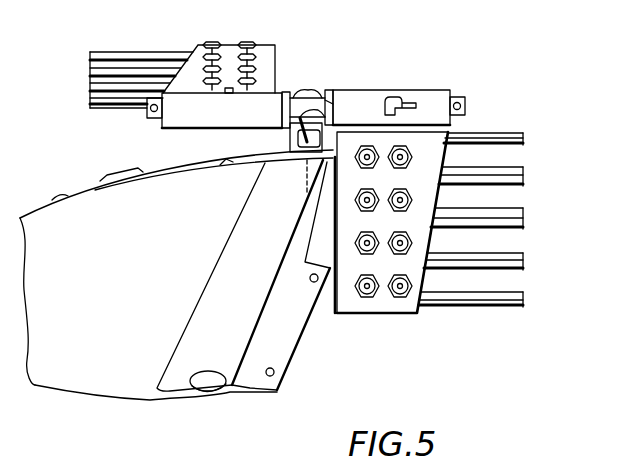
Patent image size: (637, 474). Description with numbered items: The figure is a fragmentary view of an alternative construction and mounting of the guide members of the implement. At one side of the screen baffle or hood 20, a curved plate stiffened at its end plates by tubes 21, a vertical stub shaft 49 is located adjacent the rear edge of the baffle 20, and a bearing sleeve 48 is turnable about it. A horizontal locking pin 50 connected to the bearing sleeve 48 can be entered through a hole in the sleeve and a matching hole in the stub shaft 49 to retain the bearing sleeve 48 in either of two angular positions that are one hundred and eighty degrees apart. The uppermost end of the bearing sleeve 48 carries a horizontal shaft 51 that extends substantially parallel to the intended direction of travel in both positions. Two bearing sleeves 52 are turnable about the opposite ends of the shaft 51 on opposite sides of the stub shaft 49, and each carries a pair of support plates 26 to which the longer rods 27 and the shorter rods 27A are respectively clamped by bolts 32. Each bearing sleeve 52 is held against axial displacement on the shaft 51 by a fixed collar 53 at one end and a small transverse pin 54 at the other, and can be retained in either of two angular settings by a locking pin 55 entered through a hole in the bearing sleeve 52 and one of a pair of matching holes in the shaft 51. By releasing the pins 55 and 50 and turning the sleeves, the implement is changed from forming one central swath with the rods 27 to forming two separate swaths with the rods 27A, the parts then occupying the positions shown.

The screen baffle or hood 20 is at (84, 192).
The tube 21 is at (204, 299).
The support plate 26 is at (266, 48).
The rod 27 is at (86, 82).
The rod 27A is at (526, 215).
The bolt 32 is at (247, 42).
The bearing sleeve 48 is at (290, 138).
The stub shaft 49 is at (300, 164).
The locking pin 50 is at (333, 104).
The shaft 51 is at (155, 121).
The bearing sleeve 52 is at (201, 120).
The fixed collar 53 is at (298, 92).
The transverse pin 54 is at (148, 110).
The locking pin 55 is at (233, 93).